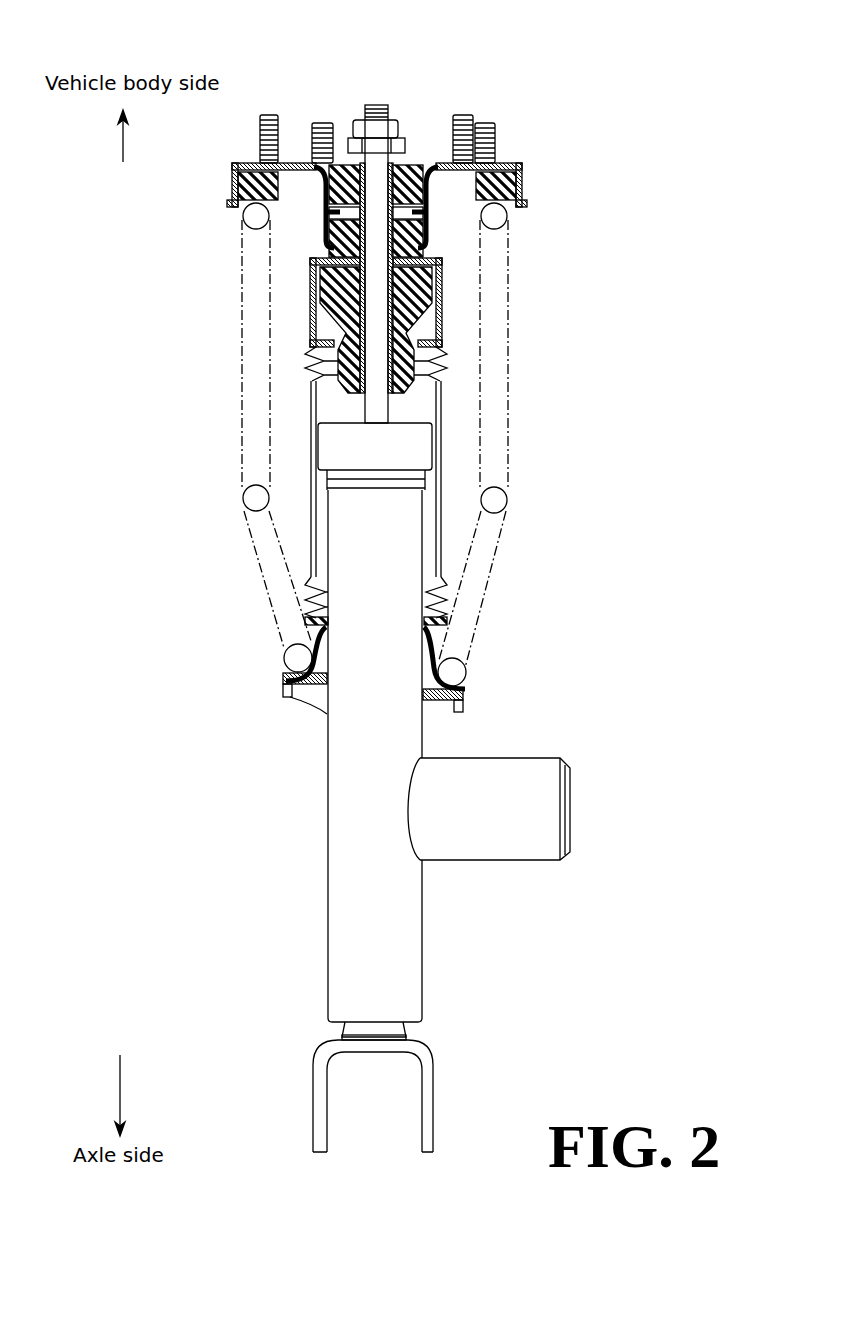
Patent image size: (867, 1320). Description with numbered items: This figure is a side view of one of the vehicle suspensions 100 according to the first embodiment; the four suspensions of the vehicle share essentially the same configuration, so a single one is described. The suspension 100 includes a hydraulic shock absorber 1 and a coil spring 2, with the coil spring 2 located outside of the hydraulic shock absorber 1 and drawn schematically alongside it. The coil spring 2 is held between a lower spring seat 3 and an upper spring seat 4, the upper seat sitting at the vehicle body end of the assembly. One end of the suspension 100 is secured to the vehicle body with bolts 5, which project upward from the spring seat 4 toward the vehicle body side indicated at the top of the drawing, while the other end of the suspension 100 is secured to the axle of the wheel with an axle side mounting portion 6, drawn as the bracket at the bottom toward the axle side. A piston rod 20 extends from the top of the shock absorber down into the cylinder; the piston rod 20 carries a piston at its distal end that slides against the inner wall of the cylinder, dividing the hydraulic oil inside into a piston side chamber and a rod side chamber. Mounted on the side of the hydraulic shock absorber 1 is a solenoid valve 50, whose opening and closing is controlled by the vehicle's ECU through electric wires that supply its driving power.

The suspension 100 is at (594, 125).
The hydraulic shock absorber 1 is at (440, 932).
The coil spring 2 is at (242, 468).
The spring seat 3 is at (300, 690).
The spring seat 4 is at (228, 187).
The bolts 5 is at (260, 131).
The axle side mounting portion 6 is at (313, 1092).
The piston rod 20 is at (369, 412).
The solenoid valve 50 is at (563, 763).